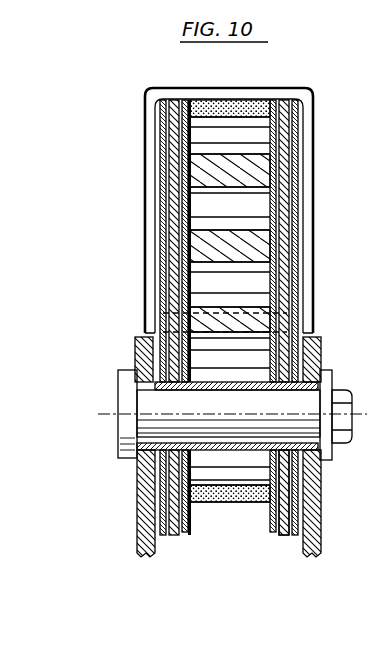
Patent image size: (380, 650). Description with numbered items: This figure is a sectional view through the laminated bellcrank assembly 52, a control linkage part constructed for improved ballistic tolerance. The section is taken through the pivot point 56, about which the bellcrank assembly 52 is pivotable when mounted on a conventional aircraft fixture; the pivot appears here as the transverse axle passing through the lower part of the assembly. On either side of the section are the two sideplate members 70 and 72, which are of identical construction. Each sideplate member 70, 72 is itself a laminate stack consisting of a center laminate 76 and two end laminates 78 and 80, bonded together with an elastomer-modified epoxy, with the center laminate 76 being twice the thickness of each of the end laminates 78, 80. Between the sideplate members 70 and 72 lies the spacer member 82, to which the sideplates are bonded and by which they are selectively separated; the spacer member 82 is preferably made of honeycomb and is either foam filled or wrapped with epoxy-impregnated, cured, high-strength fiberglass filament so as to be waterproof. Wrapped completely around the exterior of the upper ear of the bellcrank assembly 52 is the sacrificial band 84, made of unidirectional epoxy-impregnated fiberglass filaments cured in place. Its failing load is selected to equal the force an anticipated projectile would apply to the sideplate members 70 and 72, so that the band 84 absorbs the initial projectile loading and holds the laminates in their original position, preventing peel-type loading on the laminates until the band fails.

The bellcrank assembly 52 is at (290, 76).
The pivot point 56 is at (118, 412).
The sideplate member 70 is at (158, 258).
The sideplate member 72 is at (298, 252).
The center laminate 76 is at (285, 527).
The end laminate 78 is at (268, 520).
The end laminate 80 is at (294, 533).
The spacer member 82 is at (257, 192).
The sacrificial band 84 is at (152, 98).